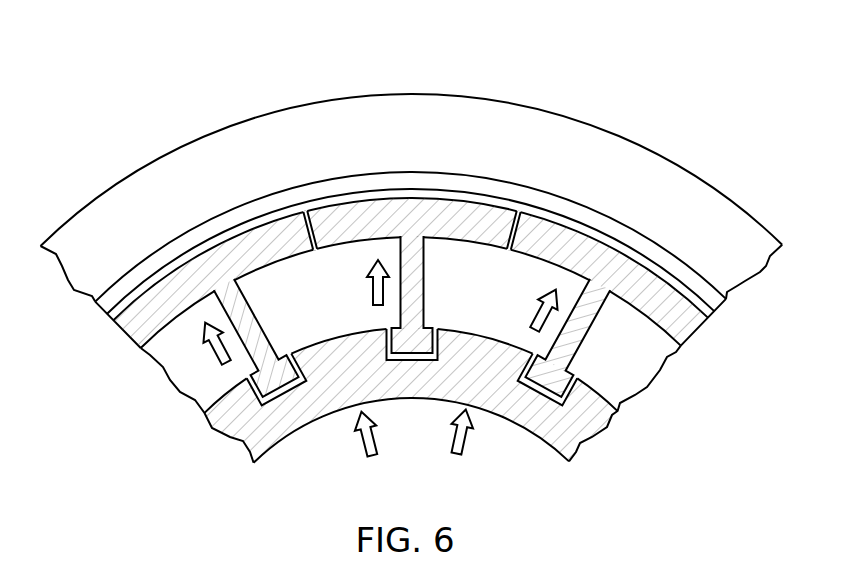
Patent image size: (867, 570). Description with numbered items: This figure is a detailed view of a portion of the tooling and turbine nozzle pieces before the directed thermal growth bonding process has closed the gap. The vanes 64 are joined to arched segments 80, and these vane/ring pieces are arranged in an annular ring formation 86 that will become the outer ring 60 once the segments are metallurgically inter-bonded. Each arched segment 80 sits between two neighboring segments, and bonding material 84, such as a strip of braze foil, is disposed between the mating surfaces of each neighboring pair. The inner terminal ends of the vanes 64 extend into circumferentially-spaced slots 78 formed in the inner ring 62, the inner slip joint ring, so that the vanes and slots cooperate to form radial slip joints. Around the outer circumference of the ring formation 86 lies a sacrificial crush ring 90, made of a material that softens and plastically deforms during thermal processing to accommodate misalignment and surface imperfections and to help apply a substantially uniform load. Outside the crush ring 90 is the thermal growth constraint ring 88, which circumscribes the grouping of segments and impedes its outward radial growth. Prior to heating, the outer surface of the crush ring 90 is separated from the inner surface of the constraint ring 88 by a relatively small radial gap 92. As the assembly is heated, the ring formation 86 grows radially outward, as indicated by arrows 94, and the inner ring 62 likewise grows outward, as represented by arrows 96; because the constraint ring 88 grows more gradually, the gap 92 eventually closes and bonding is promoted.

The outer ring 60 is at (133, 342).
The inner ring 62 is at (500, 412).
The vanes 64 is at (250, 312).
The slots 78 is at (291, 395).
The arched segments 80 is at (228, 262).
The bonding material 84 is at (305, 222).
The ring formation 86 is at (143, 281).
The thermal growth constraint ring 88 is at (722, 205).
The sacrificial crush ring 90 is at (660, 282).
The radial gap 92 is at (717, 308).
The arrows 94 is at (213, 365).
The arrows 96 is at (356, 445).